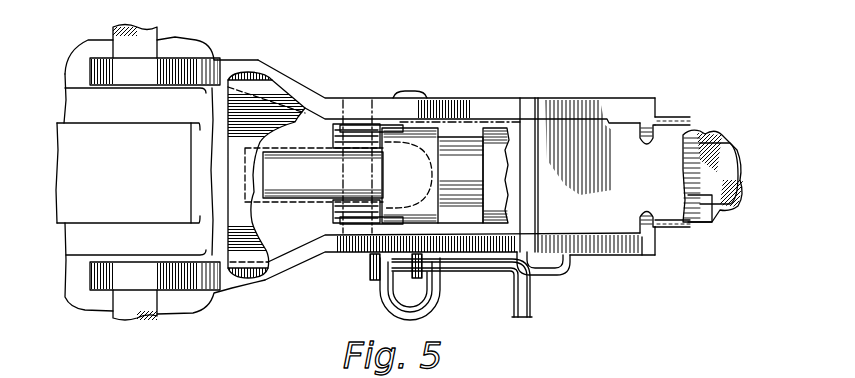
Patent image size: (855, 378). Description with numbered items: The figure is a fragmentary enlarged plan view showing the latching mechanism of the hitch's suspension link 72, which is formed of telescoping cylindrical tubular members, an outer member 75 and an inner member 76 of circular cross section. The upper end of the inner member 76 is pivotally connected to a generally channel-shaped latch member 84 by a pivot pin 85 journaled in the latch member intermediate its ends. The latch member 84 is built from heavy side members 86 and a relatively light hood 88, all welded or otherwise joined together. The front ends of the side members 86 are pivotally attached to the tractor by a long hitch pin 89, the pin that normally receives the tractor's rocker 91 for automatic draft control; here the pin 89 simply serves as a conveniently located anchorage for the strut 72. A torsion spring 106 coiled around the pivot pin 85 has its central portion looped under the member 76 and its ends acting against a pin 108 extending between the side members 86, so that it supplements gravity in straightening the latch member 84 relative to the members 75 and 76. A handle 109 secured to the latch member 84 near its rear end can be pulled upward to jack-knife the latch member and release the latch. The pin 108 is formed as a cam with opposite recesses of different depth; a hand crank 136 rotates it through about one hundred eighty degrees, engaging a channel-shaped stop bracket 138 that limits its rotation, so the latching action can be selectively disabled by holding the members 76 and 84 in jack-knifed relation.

The suspension link 72 is at (697, 115).
The outer telescoping member 75 is at (708, 222).
The inner telescoping member 76 is at (723, 162).
The latch member 84 is at (601, 97).
The pivot pin 85 is at (337, 130).
The side members 86 is at (493, 105).
The hood 88 is at (613, 133).
The hitch pin 89 is at (125, 308).
The rocker 91 is at (80, 108).
The torsion spring 106 is at (335, 214).
The cam pin 108 is at (397, 263).
The handle 109 is at (527, 210).
The hand crank 136 is at (478, 262).
The stop bracket 138 is at (370, 268).